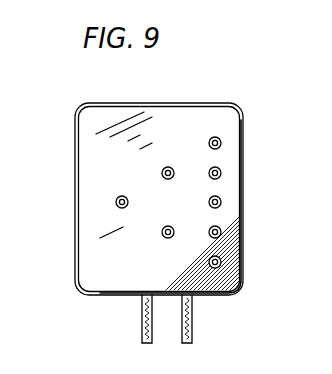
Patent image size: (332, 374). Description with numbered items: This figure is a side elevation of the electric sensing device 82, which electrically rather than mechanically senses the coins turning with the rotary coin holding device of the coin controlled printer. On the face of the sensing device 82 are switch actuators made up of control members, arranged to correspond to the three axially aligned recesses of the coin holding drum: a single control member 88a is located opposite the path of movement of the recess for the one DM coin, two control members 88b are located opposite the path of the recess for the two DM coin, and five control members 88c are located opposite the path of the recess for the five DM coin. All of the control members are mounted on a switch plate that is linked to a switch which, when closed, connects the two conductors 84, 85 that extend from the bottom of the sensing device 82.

The electric sensing device 82 is at (195, 123).
The conductor 84 is at (142, 320).
The conductor 85 is at (192, 322).
The control member 88a is at (116, 203).
The control members 88b is at (165, 238).
The control members 88c is at (221, 173).